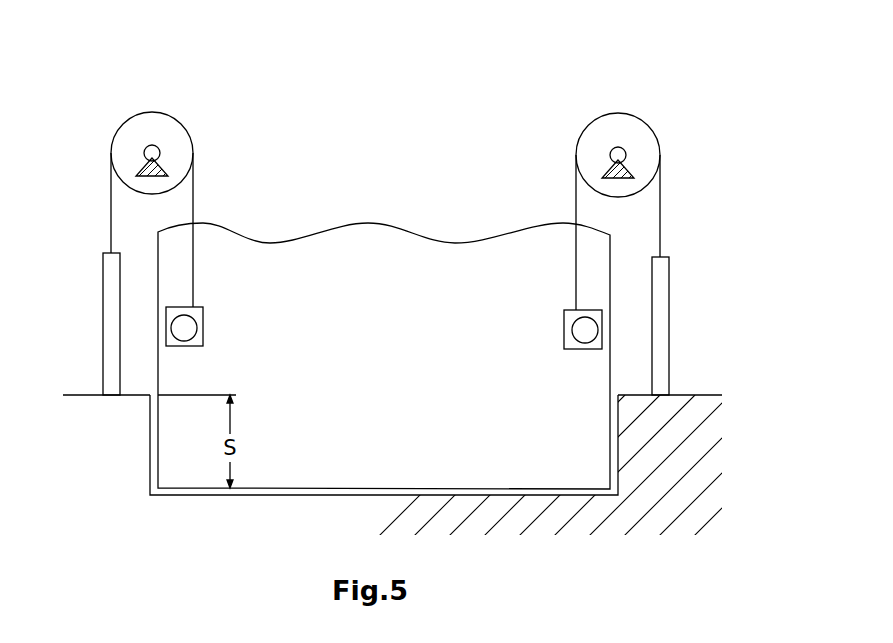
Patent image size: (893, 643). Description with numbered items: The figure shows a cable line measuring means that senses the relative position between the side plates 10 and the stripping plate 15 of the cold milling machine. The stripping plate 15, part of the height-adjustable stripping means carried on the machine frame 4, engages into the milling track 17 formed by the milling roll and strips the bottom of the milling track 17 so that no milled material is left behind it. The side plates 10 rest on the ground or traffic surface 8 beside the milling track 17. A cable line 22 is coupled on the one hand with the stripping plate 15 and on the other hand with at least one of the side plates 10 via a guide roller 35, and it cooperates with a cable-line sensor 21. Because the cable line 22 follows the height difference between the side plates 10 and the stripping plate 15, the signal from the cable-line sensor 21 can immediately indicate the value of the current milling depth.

The machine frame 4 is at (144, 153).
The ground or traffic surface 8 is at (702, 397).
The side plates 10 is at (110, 288).
The stripping plate 15 is at (393, 462).
The milling track 17 is at (308, 495).
The cable-line sensor 21 is at (197, 315).
The cable line 22 is at (193, 193).
The guide roller 35 is at (158, 130).